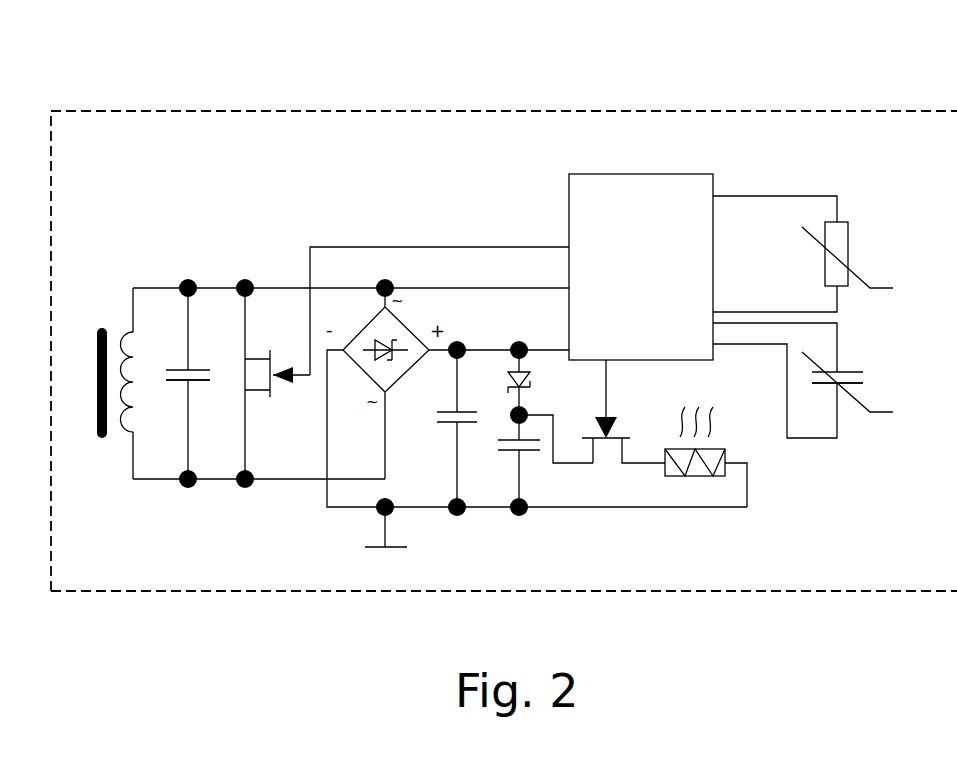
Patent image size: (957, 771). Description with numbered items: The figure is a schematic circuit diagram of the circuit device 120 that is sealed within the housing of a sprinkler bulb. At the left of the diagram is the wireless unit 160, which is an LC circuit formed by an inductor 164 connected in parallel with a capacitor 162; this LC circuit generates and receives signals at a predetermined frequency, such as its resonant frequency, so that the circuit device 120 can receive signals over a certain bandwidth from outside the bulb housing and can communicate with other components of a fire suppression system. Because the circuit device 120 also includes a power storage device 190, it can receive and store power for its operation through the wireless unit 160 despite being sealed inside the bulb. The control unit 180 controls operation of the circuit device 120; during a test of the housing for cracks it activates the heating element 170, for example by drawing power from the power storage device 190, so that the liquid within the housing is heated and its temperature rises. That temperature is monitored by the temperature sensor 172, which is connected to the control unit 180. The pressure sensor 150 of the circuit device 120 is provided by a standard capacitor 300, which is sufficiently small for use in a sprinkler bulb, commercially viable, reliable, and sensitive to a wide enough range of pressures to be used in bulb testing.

The circuit device 120 is at (690, 77).
The wireless unit 160 is at (150, 233).
The inductor 164 is at (128, 337).
The capacitor 162 is at (193, 370).
The capacitor 300 is at (175, 382).
The power storage device 190 is at (472, 324).
The control unit 180 is at (660, 281).
The heating element 170 is at (697, 477).
The temperature sensor 172 is at (850, 238).
The pressure sensor 150 is at (853, 398).